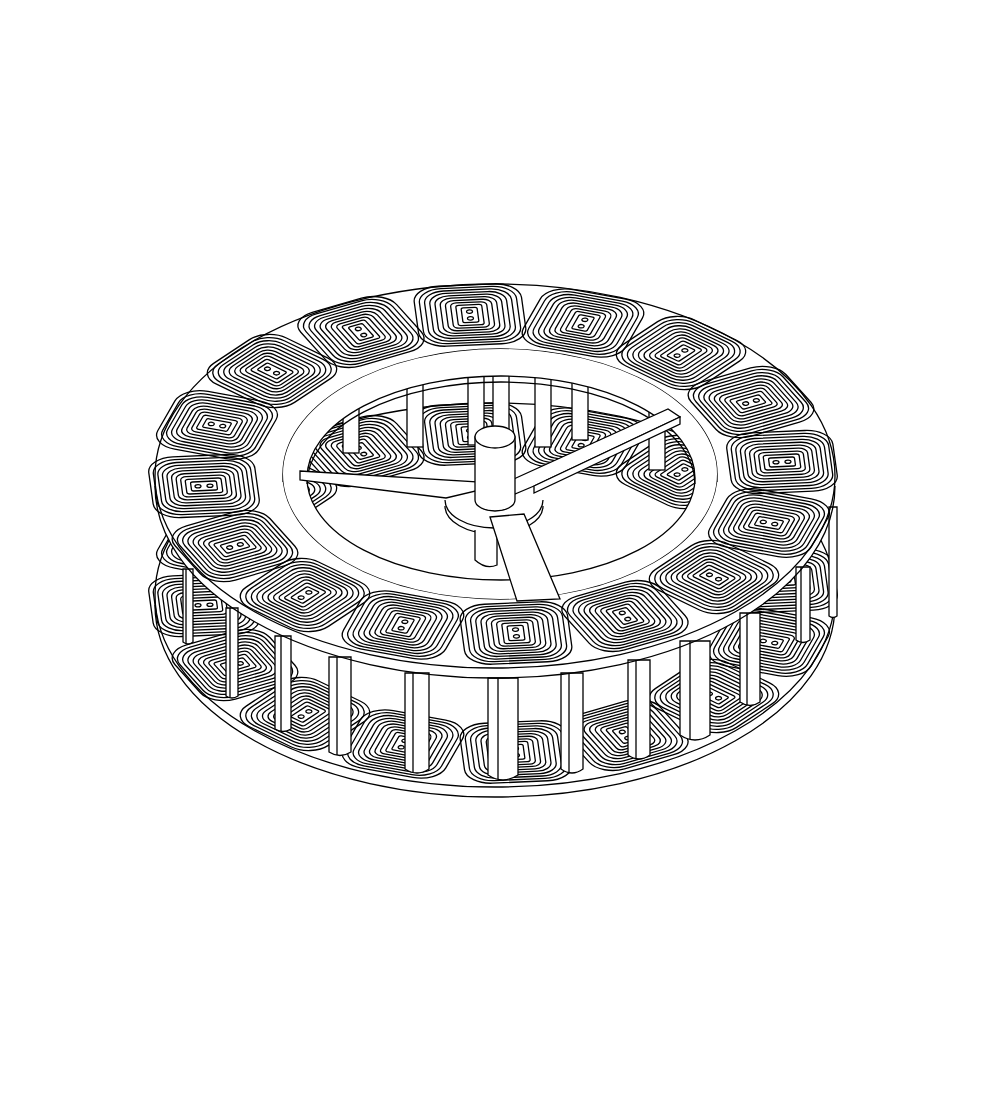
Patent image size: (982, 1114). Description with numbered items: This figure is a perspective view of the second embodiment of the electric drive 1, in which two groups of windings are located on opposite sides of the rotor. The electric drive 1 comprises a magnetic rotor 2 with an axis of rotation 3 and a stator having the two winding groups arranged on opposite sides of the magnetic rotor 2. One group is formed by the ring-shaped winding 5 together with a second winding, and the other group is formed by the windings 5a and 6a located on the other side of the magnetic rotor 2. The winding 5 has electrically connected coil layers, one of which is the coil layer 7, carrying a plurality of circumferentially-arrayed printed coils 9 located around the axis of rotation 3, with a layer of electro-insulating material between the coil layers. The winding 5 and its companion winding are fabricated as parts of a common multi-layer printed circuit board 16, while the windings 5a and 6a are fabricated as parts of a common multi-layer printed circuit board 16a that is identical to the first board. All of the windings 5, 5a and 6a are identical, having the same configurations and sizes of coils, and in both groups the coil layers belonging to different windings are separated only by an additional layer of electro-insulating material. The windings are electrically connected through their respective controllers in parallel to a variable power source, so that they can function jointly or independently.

The electric drive 1 is at (259, 123).
The magnetic rotor 2 is at (460, 643).
The axis of rotation 3 is at (480, 475).
The winding 5 is at (471, 423).
The winding 5a is at (455, 648).
The winding 6a is at (527, 806).
The coil layer 7 is at (653, 307).
The printed coil 9 is at (238, 347).
The multi-layer printed circuit board 16 is at (200, 598).
The multi-layer printed circuit board 16a is at (222, 706).